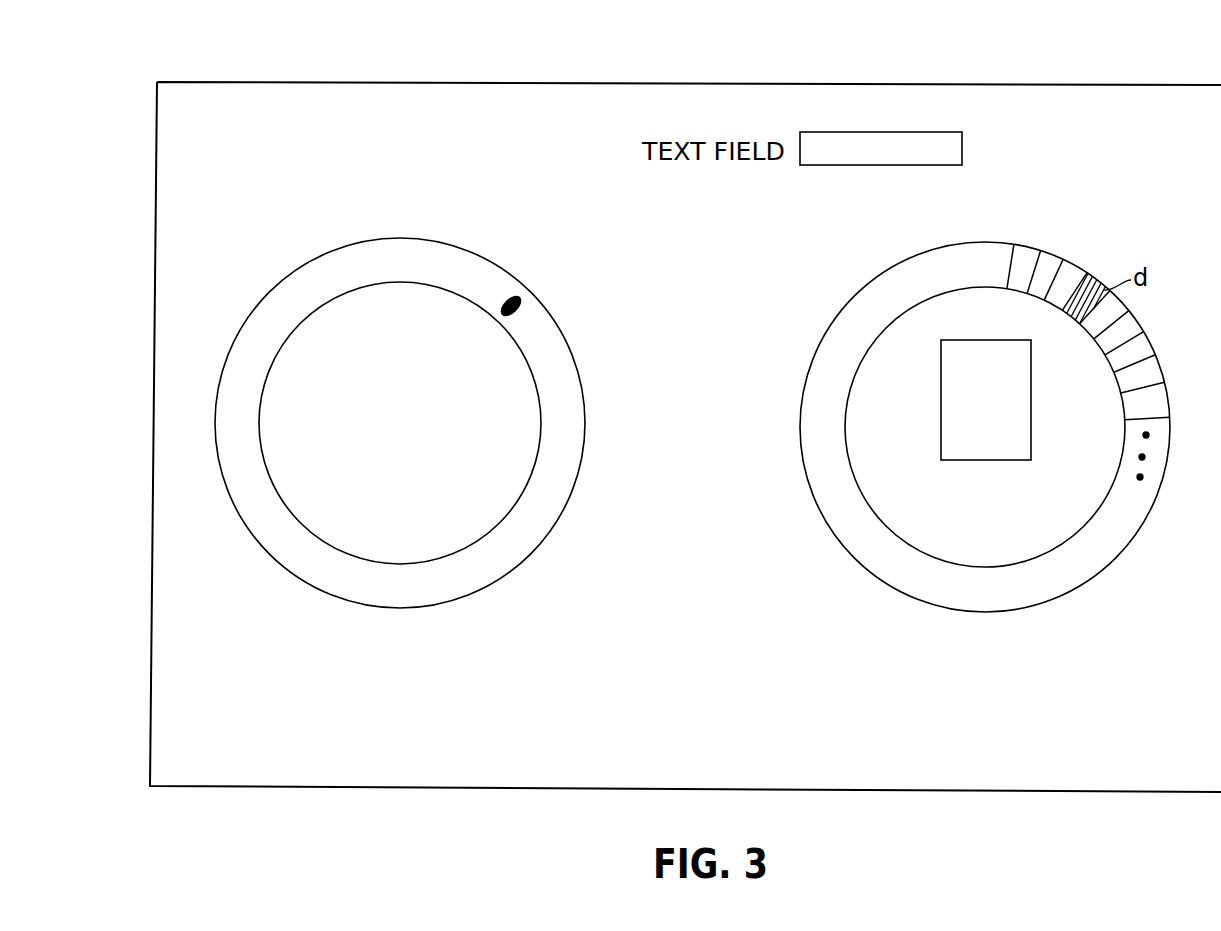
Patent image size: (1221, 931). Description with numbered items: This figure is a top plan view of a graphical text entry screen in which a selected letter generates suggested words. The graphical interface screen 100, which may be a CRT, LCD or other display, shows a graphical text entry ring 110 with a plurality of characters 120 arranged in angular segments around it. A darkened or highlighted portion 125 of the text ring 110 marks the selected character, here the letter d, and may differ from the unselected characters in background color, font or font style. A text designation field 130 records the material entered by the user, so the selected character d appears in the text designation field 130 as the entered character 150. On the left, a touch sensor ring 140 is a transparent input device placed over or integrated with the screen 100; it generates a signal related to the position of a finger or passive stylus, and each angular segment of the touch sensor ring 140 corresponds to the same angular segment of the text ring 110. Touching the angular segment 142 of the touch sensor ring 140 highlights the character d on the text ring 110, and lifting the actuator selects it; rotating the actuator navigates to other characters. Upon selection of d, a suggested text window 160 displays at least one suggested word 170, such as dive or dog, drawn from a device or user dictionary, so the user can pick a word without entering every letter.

The graphical interface screen 100 is at (720, 84).
The graphical text entry ring 110 is at (803, 429).
The plurality of characters 120 is at (1058, 262).
The highlighted portion 125 is at (1090, 280).
The text designation field 130 is at (963, 148).
The touch sensor ring 140 is at (402, 238).
The angular segment 142 is at (518, 298).
The entered character 150 is at (823, 150).
The suggested text window 160 is at (1033, 406).
The suggested word 170 is at (942, 383).